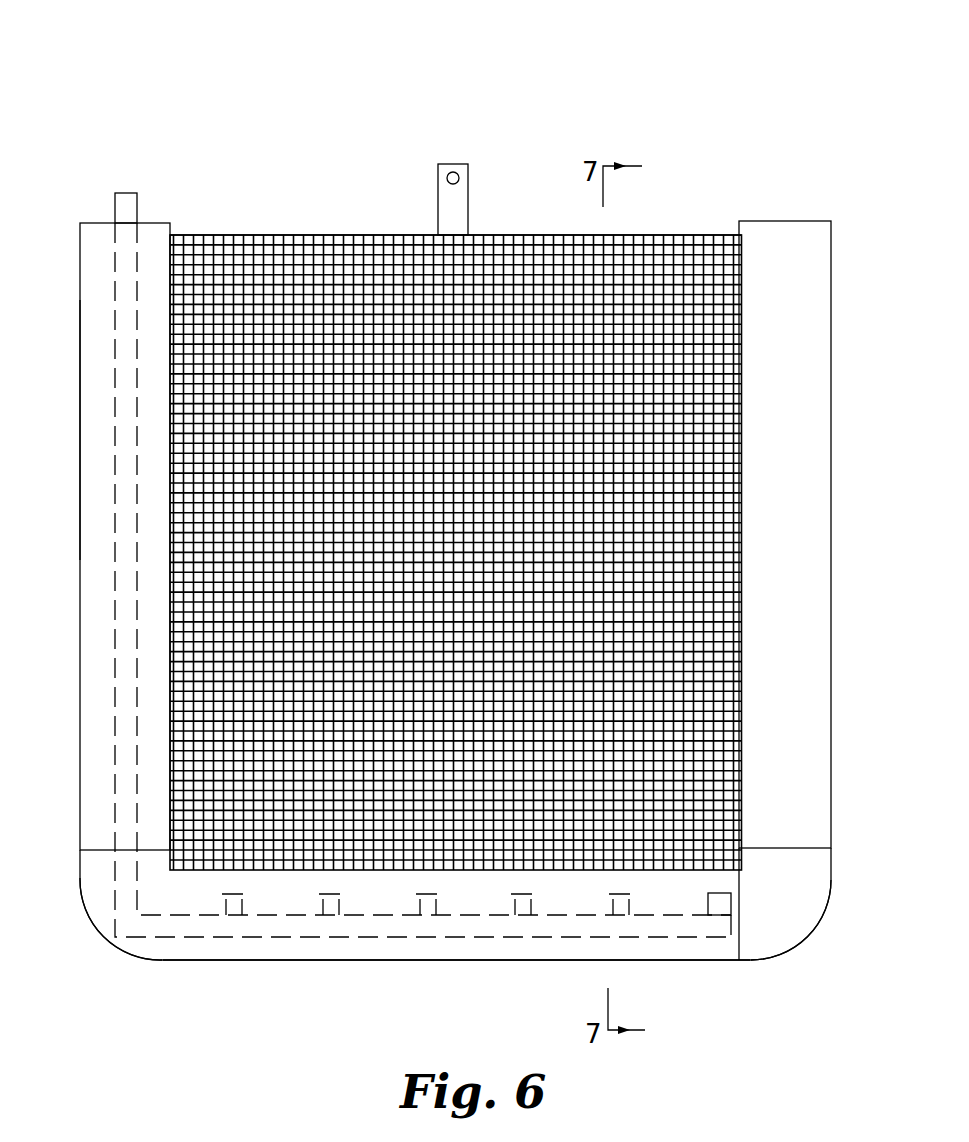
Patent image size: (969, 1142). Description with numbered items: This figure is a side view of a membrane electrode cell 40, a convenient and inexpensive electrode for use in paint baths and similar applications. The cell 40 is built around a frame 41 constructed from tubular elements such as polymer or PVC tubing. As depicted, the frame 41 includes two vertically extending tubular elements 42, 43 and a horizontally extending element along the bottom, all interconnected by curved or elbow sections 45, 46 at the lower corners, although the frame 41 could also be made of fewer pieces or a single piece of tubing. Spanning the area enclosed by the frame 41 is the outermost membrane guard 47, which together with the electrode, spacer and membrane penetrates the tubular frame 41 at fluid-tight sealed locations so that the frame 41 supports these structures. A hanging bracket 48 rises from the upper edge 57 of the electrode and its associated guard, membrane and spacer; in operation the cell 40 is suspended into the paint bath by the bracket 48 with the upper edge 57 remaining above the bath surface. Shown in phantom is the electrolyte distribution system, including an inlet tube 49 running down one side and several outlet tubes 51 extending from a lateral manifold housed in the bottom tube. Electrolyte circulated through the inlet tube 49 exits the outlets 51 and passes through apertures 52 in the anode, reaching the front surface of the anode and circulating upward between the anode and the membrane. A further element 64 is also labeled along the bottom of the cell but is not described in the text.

The filter assembly 40 is at (115, 95).
The frame 41 is at (85, 312).
The side frame member 42 is at (85, 432).
The side frame member 43 is at (776, 405).
The rounded corner 45 is at (96, 895).
The rounded corner 46 is at (786, 910).
The mesh screen 47 is at (678, 270).
The mounting tab 48 is at (468, 203).
The channel 49 is at (115, 605).
The clip 51 is at (222, 905).
The bottom strip 52 is at (286, 937).
The top edge of screen 57 is at (275, 235).
The bottom frame member 64 is at (501, 960).